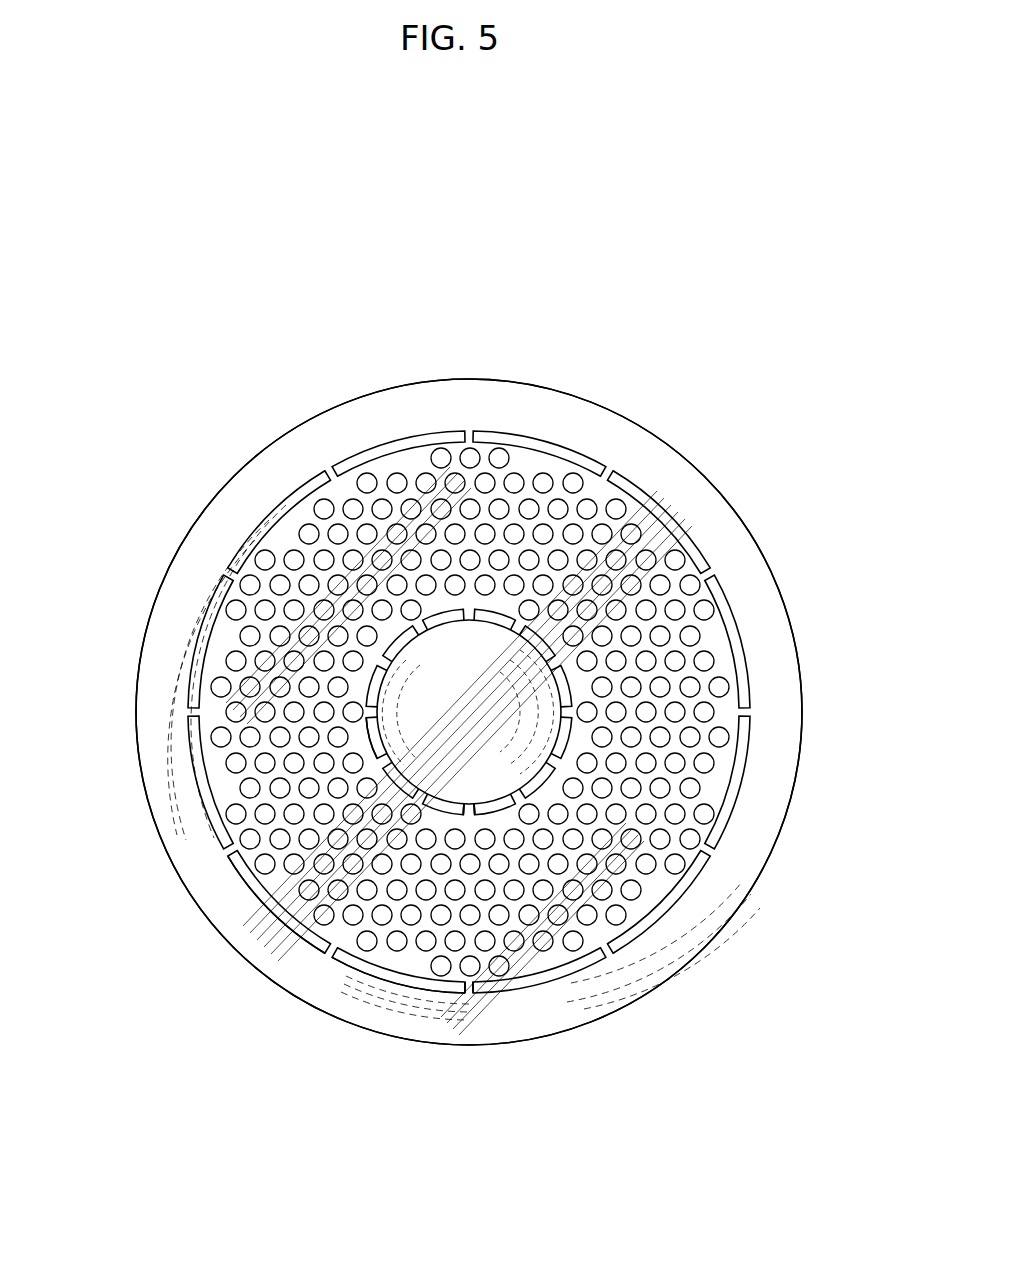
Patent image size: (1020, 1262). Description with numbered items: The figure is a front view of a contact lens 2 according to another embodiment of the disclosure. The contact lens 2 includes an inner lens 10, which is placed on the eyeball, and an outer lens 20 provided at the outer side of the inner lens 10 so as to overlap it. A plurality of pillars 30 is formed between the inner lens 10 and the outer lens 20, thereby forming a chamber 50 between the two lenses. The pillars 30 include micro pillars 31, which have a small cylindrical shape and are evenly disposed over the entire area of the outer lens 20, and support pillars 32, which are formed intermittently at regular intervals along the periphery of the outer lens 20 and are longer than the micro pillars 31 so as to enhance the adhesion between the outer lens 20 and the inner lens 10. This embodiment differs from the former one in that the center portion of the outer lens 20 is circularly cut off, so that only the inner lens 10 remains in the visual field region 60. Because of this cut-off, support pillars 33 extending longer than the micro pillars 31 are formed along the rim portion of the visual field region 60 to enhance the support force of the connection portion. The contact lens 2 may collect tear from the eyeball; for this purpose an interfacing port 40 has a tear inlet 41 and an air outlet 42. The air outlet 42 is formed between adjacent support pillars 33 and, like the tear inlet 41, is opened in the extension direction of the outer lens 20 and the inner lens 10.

The contact lens 2 is at (433, 315).
The inner lens 10 is at (760, 873).
The outer lens 20 is at (762, 712).
The pillars 30 is at (394, 781).
The micro pillars 31 is at (276, 900).
The support pillars 32 is at (377, 980).
The support pillars 33 is at (365, 733).
The interfacing port 40 is at (287, 930).
The tear inlet 41 is at (470, 990).
The air outlet 42 is at (468, 728).
The chamber 50 is at (717, 637).
The visual field region 60 is at (480, 652).